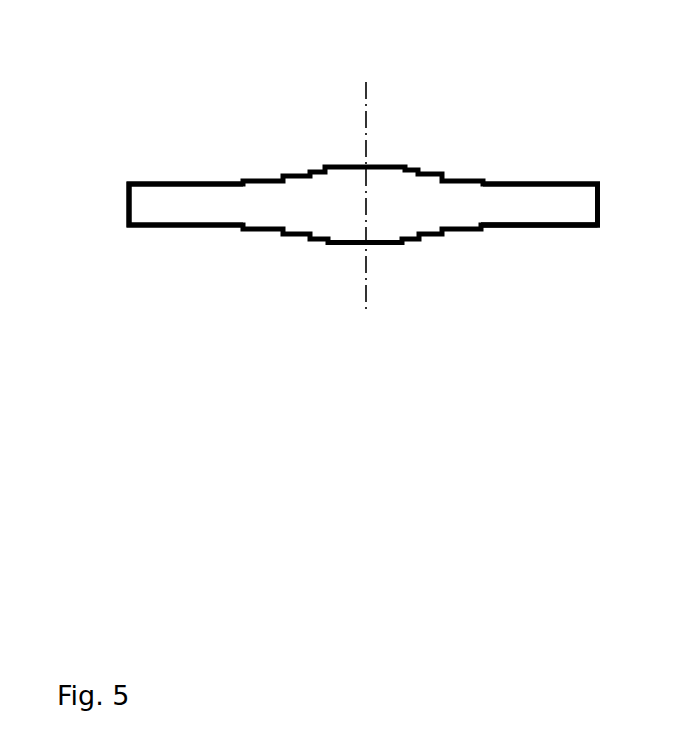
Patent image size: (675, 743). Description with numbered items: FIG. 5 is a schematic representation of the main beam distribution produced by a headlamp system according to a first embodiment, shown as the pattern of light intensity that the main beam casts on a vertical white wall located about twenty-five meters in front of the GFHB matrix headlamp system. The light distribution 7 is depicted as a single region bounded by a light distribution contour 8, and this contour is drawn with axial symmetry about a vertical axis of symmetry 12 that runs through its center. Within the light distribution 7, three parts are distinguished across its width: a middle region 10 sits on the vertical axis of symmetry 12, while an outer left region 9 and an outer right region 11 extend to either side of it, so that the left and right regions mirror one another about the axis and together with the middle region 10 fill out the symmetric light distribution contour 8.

The light distribution 7 is at (150, 143).
The light distribution contour 8 is at (542, 182).
The outer left region 9 is at (184, 252).
The middle region 10 is at (392, 265).
The outer right region 11 is at (537, 259).
The vertical axis of symmetry 12 is at (365, 113).